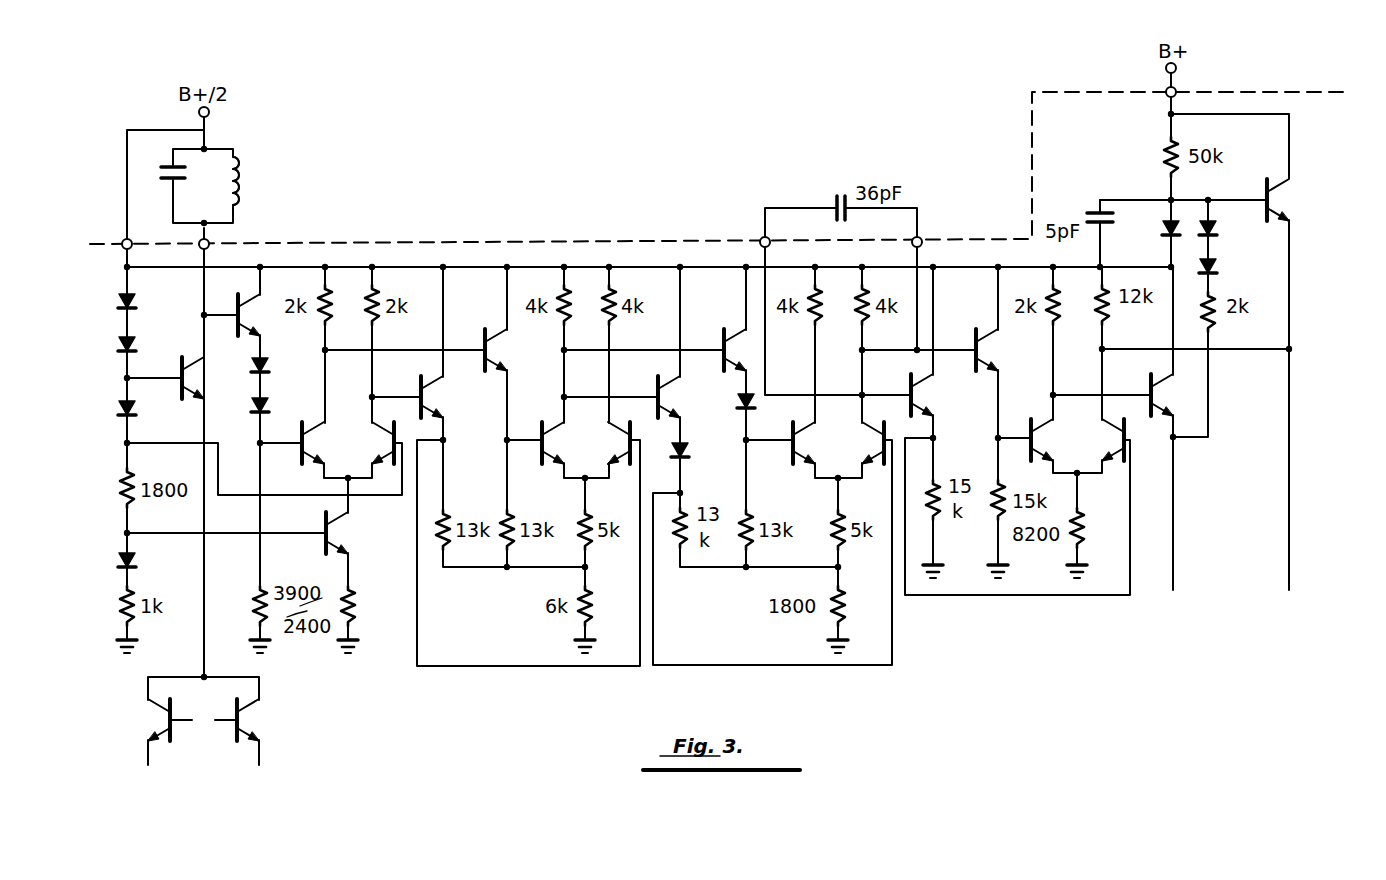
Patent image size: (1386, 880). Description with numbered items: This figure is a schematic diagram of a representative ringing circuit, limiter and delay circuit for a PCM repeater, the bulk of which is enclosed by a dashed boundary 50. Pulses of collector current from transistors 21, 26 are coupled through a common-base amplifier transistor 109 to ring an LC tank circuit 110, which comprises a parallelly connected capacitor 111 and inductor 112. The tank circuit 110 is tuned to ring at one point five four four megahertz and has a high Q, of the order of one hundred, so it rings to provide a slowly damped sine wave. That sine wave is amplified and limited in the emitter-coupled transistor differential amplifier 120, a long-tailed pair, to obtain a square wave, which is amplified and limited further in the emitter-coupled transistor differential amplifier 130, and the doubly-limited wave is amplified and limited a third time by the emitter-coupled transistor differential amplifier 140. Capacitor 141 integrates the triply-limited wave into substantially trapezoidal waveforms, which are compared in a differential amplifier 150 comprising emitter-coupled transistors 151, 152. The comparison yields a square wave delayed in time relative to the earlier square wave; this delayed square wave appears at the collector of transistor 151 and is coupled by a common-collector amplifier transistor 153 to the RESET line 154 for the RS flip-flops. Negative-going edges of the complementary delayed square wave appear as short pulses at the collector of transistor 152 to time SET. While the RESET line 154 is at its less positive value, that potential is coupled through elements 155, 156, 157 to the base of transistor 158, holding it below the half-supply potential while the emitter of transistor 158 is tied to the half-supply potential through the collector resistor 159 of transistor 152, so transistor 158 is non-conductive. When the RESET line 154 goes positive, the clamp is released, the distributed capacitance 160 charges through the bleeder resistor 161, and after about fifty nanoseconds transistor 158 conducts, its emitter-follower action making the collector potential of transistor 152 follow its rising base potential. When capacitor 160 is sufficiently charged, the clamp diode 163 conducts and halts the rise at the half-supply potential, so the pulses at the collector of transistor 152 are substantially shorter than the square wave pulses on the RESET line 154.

The transistor 21 is at (163, 704).
The transistor 26 is at (248, 704).
The integrated circuit chip boundary 50 is at (526, 241).
The common-base amplifier transistor 109 is at (192, 375).
The LC tank circuit 110 is at (221, 206).
The capacitor 111 is at (170, 168).
The inductor 112 is at (239, 190).
The emitter-coupled transistor differential amplifier 120 is at (366, 463).
The emitter-coupled transistor differential amplifier 130 is at (602, 463).
The emitter-coupled transistor differential amplifier 140 is at (856, 463).
The capacitor 141 is at (841, 196).
The differential amplifier 150 is at (1063, 428).
The transistor 151 is at (1047, 424).
The transistor 152 is at (1105, 430).
The common-collector amplifier transistor 153 is at (1165, 386).
The RESET line 154 is at (1175, 492).
The element 155 is at (1218, 322).
The element 156 is at (1216, 266).
The element 157 is at (1216, 235).
The transistor 158 is at (1276, 185).
The collector resistor 159 is at (1111, 314).
The distributed capacitance 160 is at (1089, 202).
The bleeder resistor 161 is at (1163, 160).
The clamp diode 163 is at (1161, 230).